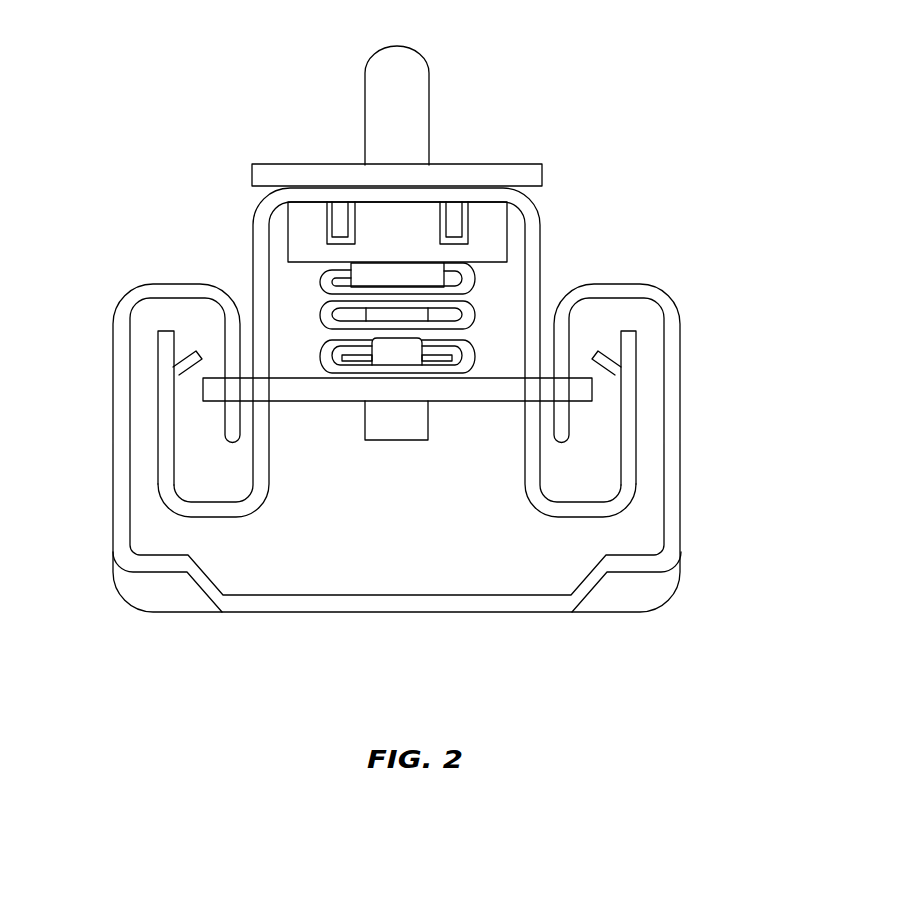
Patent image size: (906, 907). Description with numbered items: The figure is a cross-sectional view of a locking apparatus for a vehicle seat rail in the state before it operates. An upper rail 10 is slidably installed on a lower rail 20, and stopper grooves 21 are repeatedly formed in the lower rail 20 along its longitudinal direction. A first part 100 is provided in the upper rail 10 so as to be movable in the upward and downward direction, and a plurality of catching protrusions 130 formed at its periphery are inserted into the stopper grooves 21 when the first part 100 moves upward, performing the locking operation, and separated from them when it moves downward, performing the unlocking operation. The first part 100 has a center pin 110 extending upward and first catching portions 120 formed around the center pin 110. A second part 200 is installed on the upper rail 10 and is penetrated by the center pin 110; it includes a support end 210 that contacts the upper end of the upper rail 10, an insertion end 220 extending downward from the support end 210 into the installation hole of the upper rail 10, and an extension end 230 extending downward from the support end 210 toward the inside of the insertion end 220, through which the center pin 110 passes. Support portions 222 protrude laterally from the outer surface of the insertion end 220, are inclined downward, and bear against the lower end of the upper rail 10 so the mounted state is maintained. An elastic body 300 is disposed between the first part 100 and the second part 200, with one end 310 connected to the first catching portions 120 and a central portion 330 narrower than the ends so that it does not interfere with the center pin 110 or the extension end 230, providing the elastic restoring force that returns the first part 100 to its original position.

The upper rail 10 is at (265, 222).
The lower rail 20 is at (680, 502).
The stopper groove 21 is at (562, 380).
The first part 100 is at (309, 518).
The center pin 110 is at (417, 72).
The first catching portion 120 is at (397, 353).
The catching protrusion 130 is at (213, 390).
The second part 200 is at (414, 190).
The support end 210 is at (308, 175).
The insertion end 220 is at (300, 243).
The support portion 222 is at (455, 218).
The extension end 230 is at (427, 276).
The elastic body 300 is at (396, 478).
The one end of elastic body 310 is at (329, 372).
The central portion of elastic body 330 is at (325, 288).